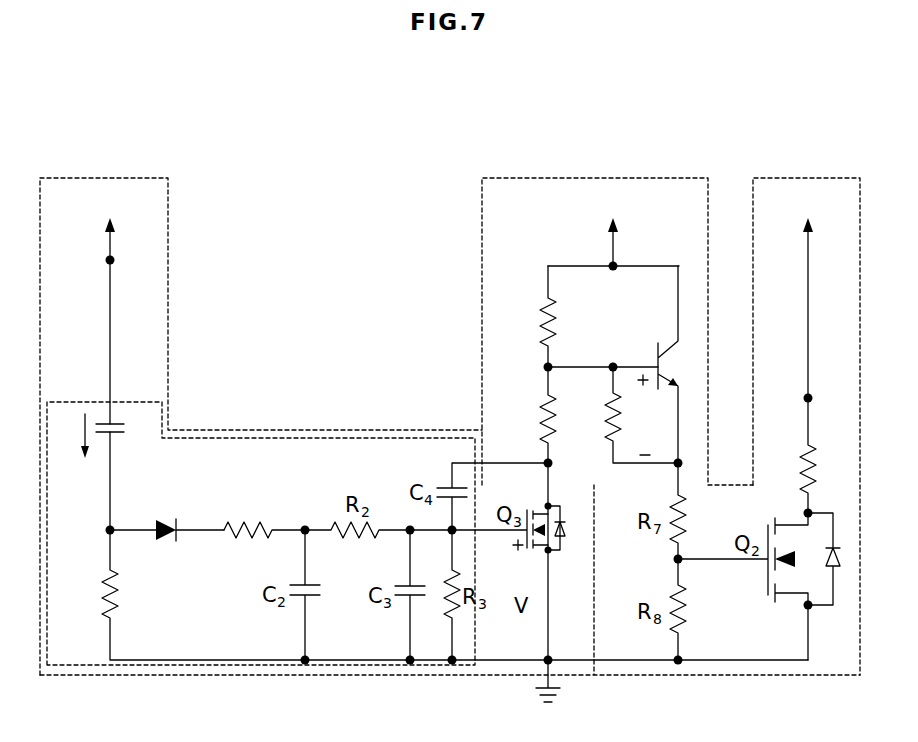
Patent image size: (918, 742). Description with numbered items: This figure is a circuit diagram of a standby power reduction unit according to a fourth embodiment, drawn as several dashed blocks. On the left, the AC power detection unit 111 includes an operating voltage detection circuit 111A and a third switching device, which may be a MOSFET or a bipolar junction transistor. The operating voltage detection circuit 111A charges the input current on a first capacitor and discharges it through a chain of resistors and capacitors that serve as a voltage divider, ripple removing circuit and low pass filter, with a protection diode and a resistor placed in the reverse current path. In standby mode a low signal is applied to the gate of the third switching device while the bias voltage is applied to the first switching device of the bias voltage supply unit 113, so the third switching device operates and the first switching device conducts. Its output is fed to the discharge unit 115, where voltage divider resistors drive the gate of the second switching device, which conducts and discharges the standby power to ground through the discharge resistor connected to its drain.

The AC power detection unit 111 is at (103, 178).
The operating voltage detection circuit 111A is at (272, 430).
The bias voltage supply unit 113 is at (596, 178).
The discharge unit 115 is at (807, 178).